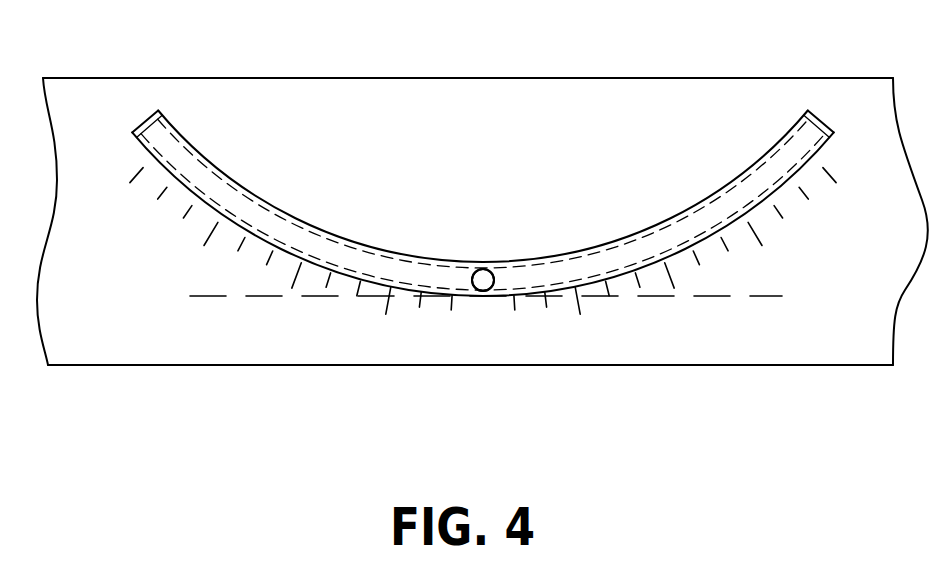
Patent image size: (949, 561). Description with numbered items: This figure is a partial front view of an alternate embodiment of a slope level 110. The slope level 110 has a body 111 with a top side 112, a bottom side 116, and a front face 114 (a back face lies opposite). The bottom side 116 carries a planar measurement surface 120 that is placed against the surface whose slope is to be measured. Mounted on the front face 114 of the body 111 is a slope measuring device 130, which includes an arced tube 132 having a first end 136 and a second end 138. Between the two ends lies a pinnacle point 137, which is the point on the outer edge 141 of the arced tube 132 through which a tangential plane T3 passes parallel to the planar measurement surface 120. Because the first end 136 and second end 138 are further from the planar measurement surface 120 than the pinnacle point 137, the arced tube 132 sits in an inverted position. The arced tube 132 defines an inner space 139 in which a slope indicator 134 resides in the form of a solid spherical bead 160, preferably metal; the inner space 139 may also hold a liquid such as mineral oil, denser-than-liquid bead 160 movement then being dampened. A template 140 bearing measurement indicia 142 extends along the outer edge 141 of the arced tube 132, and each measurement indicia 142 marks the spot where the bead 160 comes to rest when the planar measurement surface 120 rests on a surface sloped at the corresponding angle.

The slope level 110 is at (482, 234).
The body 111 is at (368, 78).
The top side 112 is at (667, 78).
The front face 114 is at (57, 313).
The bottom side 116 is at (727, 365).
The planar measurement surface 120 is at (173, 365).
The slope measuring device 130 is at (464, 153).
The arced tube 132 is at (488, 289).
The slope indicator 134 is at (487, 270).
The first end 136 is at (818, 113).
The pinnacle point 137 is at (481, 297).
The second end 138 is at (155, 112).
The inner space 139 is at (633, 253).
The template 140 is at (366, 318).
The outer edge 141 is at (760, 217).
The measurement indicia 142 is at (672, 283).
The solid spherical bead 160 is at (480, 270).
The tangential plane T3 is at (760, 298).